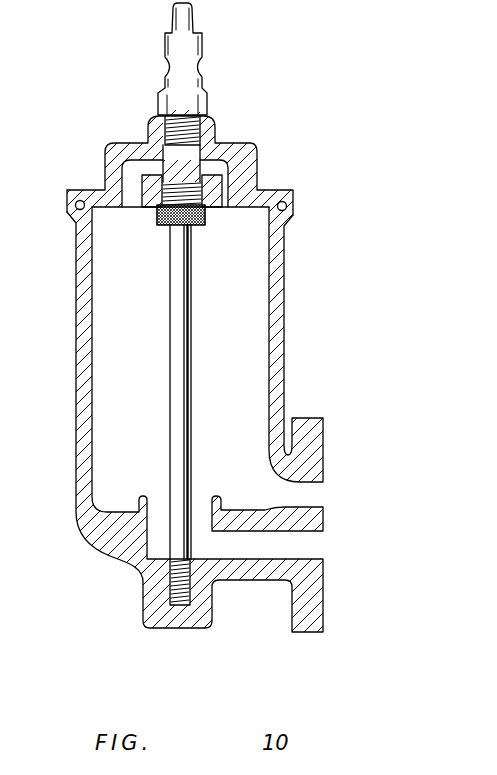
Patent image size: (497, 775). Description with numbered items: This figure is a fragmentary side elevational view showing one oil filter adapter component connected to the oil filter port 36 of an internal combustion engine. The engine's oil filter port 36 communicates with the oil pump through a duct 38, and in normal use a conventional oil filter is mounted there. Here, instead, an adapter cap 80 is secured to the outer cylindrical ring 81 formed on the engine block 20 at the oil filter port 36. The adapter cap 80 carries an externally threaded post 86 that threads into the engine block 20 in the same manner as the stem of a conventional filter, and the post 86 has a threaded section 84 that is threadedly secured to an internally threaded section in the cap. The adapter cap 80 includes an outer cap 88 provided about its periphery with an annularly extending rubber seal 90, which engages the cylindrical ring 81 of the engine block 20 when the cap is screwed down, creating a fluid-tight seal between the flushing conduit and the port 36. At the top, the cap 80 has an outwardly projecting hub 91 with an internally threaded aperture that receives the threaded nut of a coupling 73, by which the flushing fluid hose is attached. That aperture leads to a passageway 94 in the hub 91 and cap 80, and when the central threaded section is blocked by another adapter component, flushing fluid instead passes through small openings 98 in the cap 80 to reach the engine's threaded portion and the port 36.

The engine block 20 is at (323, 443).
The oil filter port 36 is at (342, 512).
The duct 38 is at (320, 545).
The coupling 73 is at (207, 108).
The adapter cap 80 is at (176, 317).
The outer cylindrical ring 81 is at (283, 318).
The threaded section 84 is at (158, 219).
The externally threaded post 86 is at (170, 346).
The outer cap 88 is at (258, 169).
The rubber seal 90 is at (68, 192).
The hub 91 is at (204, 133).
The passageway 94 is at (175, 163).
The small openings 98 is at (233, 208).